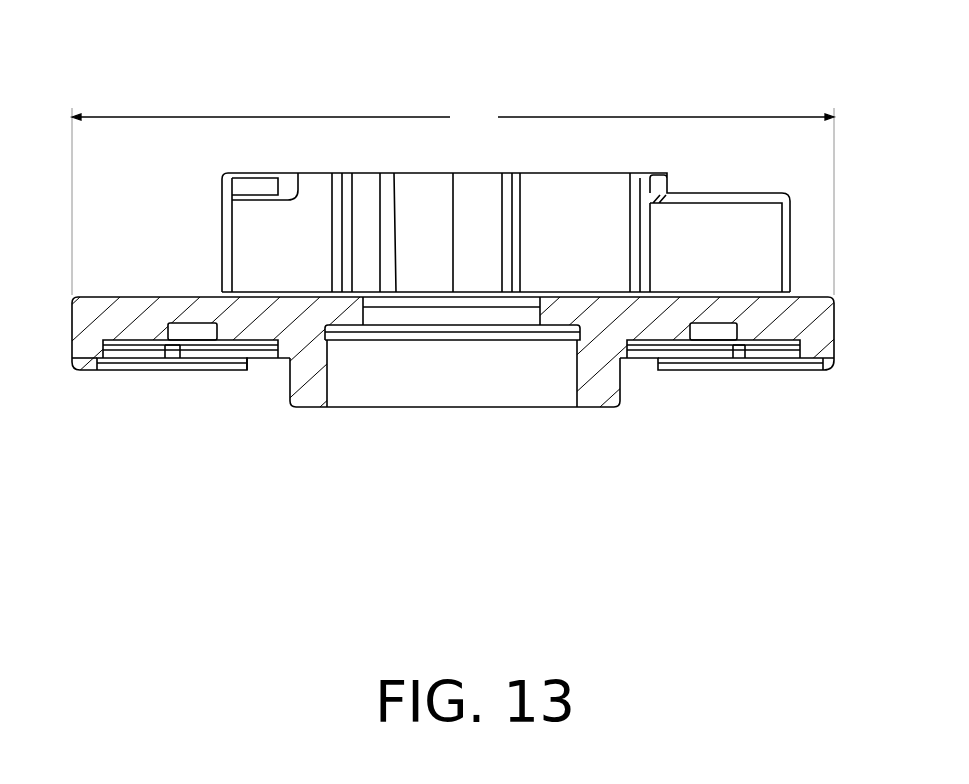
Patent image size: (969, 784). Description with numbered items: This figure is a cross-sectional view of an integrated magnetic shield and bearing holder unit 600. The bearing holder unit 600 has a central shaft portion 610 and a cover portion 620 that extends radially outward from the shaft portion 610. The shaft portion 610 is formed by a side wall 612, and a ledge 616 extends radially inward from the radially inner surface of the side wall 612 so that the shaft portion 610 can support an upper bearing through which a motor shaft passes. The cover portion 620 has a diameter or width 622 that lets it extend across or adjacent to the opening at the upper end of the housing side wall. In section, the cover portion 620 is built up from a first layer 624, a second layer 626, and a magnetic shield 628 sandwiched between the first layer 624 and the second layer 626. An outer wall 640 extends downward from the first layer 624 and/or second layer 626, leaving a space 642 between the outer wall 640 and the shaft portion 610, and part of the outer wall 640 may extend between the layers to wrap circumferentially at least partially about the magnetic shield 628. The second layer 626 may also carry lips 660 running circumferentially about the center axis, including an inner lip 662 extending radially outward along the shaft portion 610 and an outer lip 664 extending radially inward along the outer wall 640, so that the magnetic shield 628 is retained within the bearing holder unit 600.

The bearing holder unit 600 is at (263, 71).
The shaft portion 610 is at (459, 430).
The side wall 612 is at (625, 391).
The ledge 616 is at (545, 337).
The cover portion 620 is at (122, 274).
The width 622 is at (453, 199).
The first layer 624 is at (799, 322).
The second layer 626 is at (818, 359).
The magnetic shield 628 is at (690, 356).
The outer wall 640 is at (71, 382).
The space 642 is at (196, 398).
The lips 660 is at (249, 372).
The inner lip 662 is at (263, 367).
The outer lip 664 is at (95, 341).